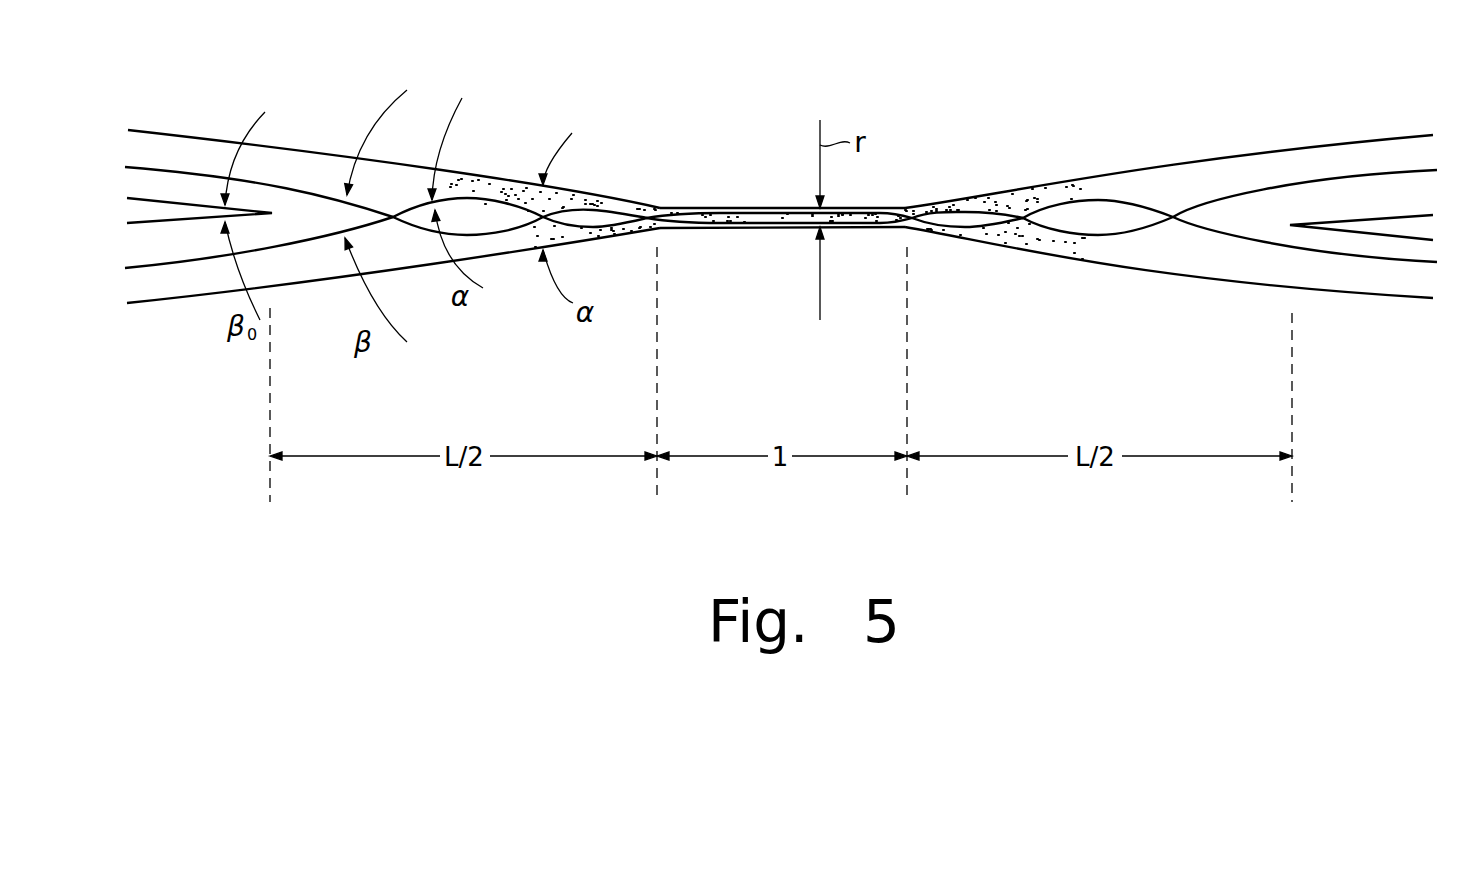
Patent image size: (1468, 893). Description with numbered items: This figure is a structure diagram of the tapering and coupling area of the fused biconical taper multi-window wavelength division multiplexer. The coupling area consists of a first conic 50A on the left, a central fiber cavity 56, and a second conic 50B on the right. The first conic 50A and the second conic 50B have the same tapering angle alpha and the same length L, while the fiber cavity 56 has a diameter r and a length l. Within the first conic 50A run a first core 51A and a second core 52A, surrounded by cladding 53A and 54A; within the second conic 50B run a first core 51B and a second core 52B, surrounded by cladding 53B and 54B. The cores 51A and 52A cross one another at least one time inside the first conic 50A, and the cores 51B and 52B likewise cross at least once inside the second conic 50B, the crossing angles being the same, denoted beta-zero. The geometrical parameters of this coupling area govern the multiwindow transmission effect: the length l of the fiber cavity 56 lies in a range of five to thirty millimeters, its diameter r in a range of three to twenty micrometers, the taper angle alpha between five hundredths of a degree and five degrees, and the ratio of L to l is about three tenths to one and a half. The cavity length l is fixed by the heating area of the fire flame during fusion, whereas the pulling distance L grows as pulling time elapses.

The first conic 50A is at (395, 182).
The second conic 50B is at (1192, 202).
The first core 51A is at (213, 177).
The first core 51B is at (1393, 170).
The second core 52A is at (152, 270).
The second core 52B is at (1340, 253).
The cladding 53A is at (160, 152).
The cladding 53B is at (1330, 167).
The cladding 54A is at (203, 277).
The cladding 54B is at (1408, 273).
The fiber cavity 56 is at (715, 207).